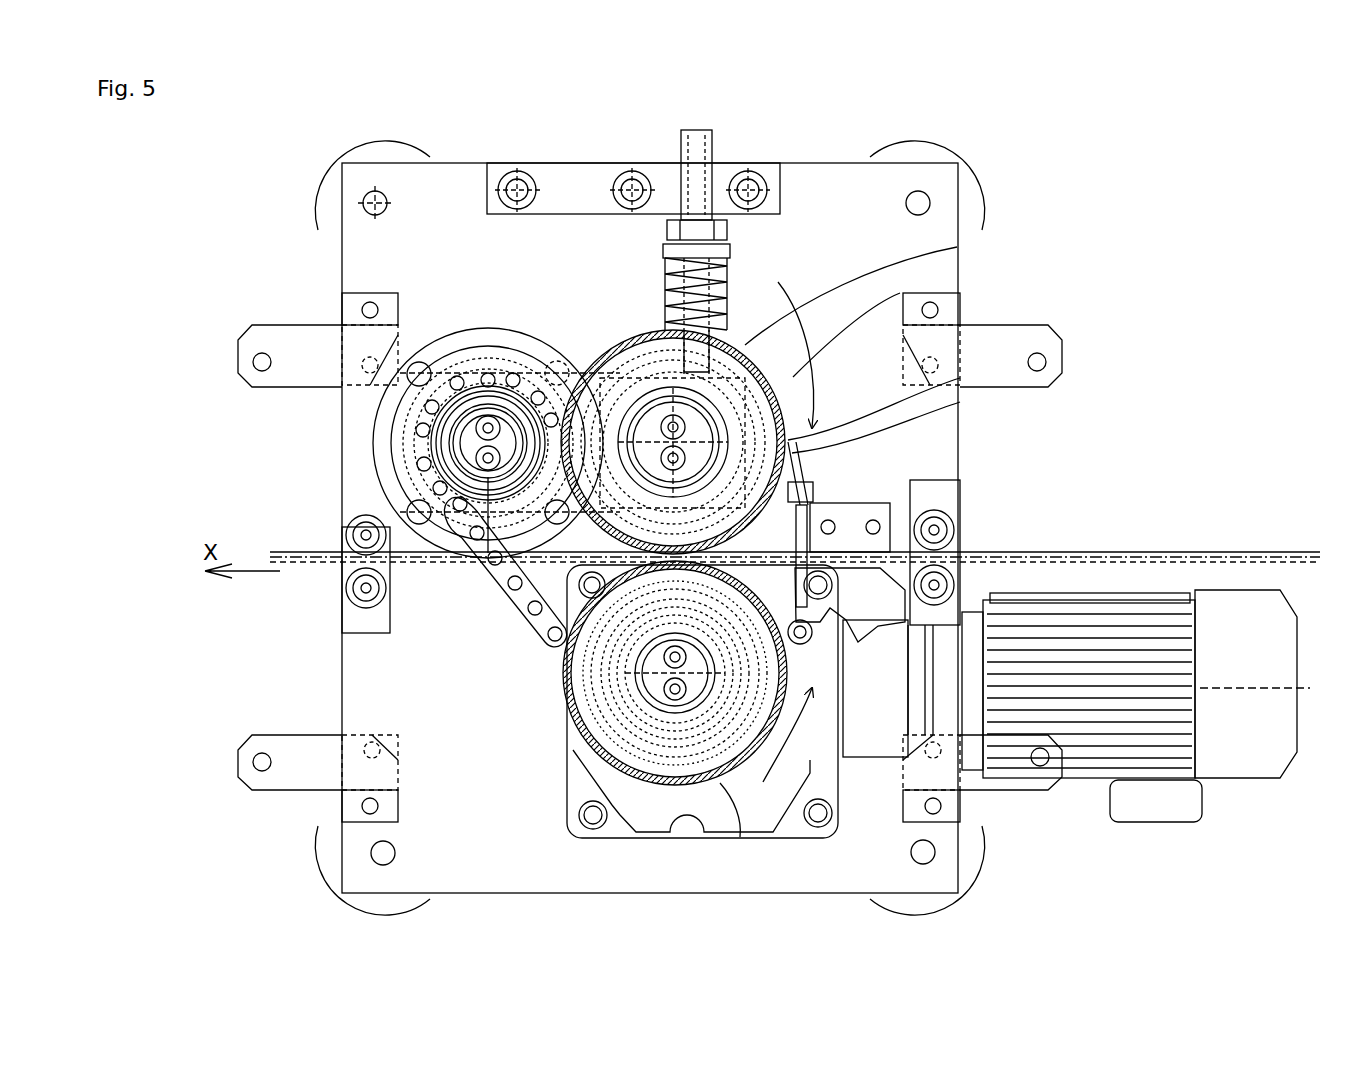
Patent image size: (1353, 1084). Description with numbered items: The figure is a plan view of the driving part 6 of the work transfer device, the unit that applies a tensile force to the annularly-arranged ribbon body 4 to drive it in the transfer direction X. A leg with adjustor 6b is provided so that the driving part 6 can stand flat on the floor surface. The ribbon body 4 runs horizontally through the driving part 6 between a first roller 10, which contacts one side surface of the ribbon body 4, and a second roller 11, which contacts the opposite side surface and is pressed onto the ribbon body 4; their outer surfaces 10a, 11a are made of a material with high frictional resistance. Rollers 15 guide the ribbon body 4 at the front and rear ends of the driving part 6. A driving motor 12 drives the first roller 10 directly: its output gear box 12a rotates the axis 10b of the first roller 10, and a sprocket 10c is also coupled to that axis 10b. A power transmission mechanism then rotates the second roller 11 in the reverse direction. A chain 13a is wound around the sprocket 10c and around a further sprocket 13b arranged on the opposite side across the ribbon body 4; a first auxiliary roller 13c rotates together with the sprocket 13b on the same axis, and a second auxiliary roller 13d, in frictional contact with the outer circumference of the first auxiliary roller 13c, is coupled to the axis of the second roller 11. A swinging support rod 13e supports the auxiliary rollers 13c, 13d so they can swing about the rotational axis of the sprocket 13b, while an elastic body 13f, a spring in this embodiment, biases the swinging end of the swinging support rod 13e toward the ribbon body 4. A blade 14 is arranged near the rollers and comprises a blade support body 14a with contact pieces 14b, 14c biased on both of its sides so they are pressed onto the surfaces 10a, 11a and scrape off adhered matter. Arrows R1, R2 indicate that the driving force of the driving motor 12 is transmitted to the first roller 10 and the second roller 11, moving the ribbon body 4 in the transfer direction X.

The ribbon body 4 is at (312, 553).
The driving part 6 is at (1085, 205).
The leg with adjustor 6b is at (918, 203).
The first roller 10 is at (633, 760).
The surface of first roller 10a is at (735, 758).
The axis 10b is at (676, 692).
The sprocket 10c is at (545, 660).
The second roller 11 is at (958, 250).
The surface of second roller 11a is at (792, 440).
The driving motor 12 is at (1090, 772).
The gear box 12a is at (838, 762).
The chain 13a is at (505, 590).
The sprocket 13b is at (400, 482).
The first auxiliary roller 13c is at (398, 428).
The second auxiliary roller 13d is at (540, 362).
The swinging support rod 13e is at (622, 372).
The elastic body 13f is at (662, 320).
The blade 14 is at (945, 531).
The blade support body 14a is at (808, 530).
The contact piece 14b is at (812, 625).
The contact piece 14c is at (862, 505).
The rollers 15 is at (352, 588).
The arrow R1 is at (805, 705).
The arrow R2 is at (903, 293).